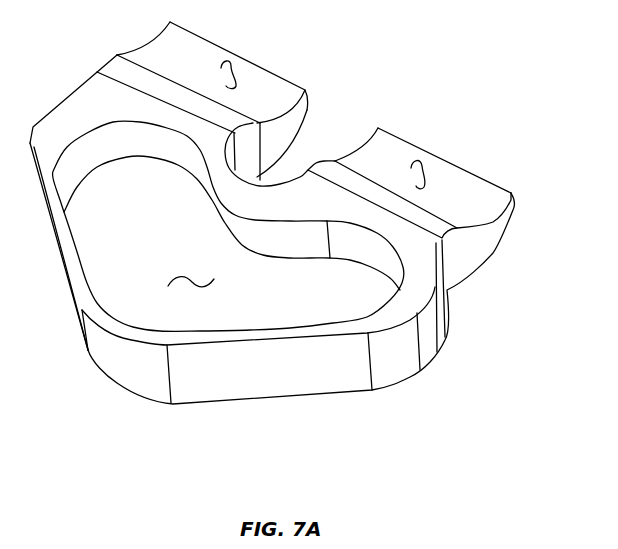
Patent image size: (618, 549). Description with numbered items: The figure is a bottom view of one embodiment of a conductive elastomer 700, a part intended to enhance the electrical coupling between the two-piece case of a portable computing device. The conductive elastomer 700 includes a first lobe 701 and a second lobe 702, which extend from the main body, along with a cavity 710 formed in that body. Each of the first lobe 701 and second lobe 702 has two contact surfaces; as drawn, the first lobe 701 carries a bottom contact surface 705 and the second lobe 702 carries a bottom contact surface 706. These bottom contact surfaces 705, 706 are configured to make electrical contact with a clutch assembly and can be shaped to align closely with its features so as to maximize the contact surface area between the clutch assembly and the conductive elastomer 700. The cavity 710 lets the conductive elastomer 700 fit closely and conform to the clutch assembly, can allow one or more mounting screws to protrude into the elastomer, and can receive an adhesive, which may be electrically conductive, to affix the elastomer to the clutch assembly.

The conductive elastomer 700 is at (513, 380).
The first lobe 701 is at (398, 137).
The second lobe 702 is at (300, 88).
The bottom contact surface 705 is at (423, 173).
The bottom contact surface 706 is at (231, 68).
The cavity 710 is at (187, 281).